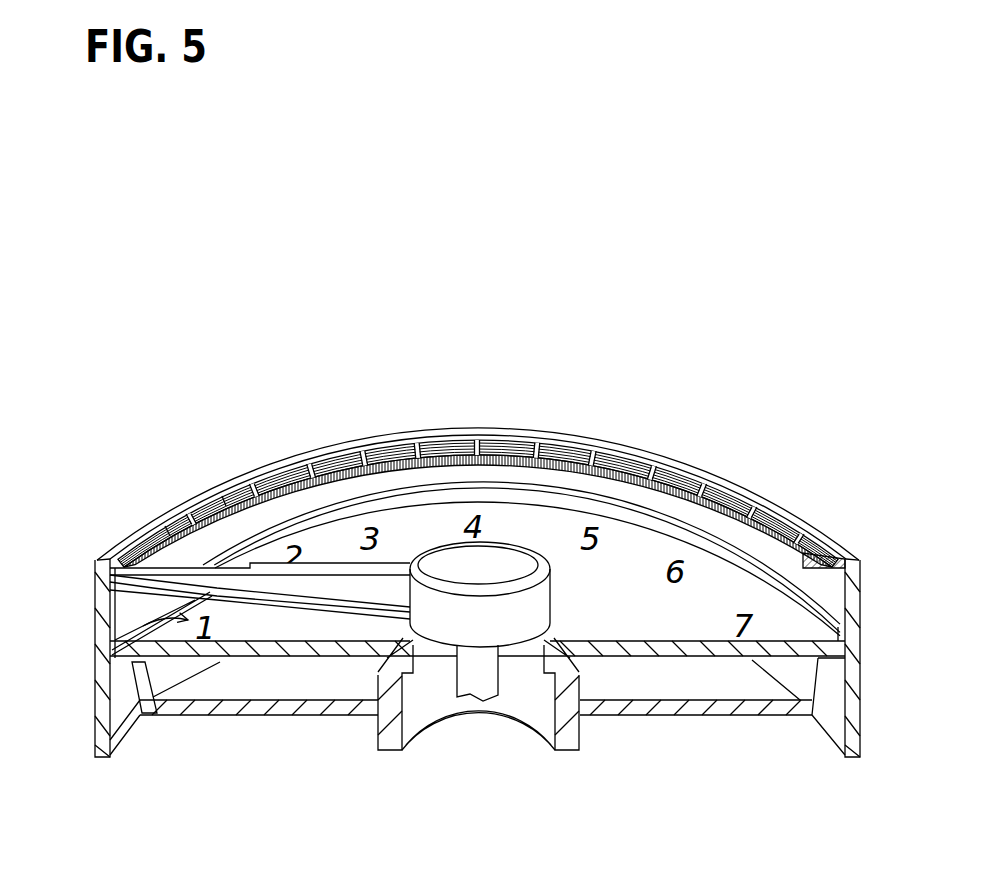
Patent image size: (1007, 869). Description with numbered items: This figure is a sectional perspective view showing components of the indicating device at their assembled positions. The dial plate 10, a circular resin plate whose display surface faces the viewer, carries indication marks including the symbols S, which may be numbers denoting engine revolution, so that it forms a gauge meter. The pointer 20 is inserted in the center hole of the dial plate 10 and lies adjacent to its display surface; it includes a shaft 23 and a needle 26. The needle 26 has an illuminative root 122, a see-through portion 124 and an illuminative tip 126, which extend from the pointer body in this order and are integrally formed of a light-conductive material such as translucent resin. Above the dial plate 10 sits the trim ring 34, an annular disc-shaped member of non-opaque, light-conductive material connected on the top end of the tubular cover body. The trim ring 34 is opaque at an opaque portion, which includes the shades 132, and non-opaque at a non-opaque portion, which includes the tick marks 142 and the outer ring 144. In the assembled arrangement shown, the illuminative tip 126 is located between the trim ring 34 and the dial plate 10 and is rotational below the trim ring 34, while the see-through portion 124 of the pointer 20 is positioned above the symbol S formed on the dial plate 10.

The dial plate 10 is at (676, 662).
The pointer 20 is at (503, 533).
The shaft 23 is at (500, 680).
The needle 26 is at (310, 542).
The trim ring 34 is at (441, 438).
The illuminative root 122 is at (337, 612).
The see-through portion 124 is at (212, 598).
The illuminative tip 126 is at (115, 621).
The shades 132 is at (203, 500).
The tick marks 142 is at (243, 477).
The outer ring 144 is at (125, 538).
The symbols S is at (115, 659).